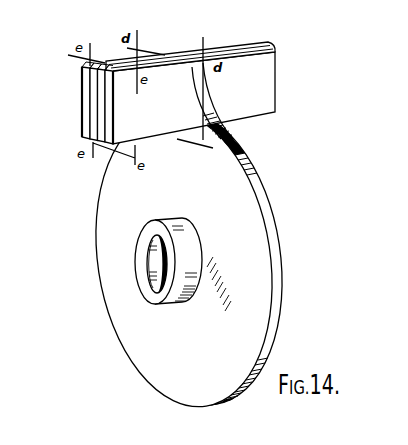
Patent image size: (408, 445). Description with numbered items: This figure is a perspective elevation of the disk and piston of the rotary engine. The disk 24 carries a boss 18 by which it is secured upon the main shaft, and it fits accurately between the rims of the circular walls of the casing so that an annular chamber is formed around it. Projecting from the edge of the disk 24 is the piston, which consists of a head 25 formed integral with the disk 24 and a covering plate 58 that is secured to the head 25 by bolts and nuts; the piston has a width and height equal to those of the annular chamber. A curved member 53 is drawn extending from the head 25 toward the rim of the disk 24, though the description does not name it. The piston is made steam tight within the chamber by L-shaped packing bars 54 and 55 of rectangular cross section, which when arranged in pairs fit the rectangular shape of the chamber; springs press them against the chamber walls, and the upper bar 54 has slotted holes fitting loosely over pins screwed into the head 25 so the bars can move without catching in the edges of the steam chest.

The disk 24 is at (189, 258).
The boss 18 is at (155, 304).
The head 25 is at (190, 93).
The covering plate 58 is at (80, 81).
The packing bar 55 is at (90, 98).
The packing bar 54 is at (99, 112).
The spoke 53 is at (213, 115).